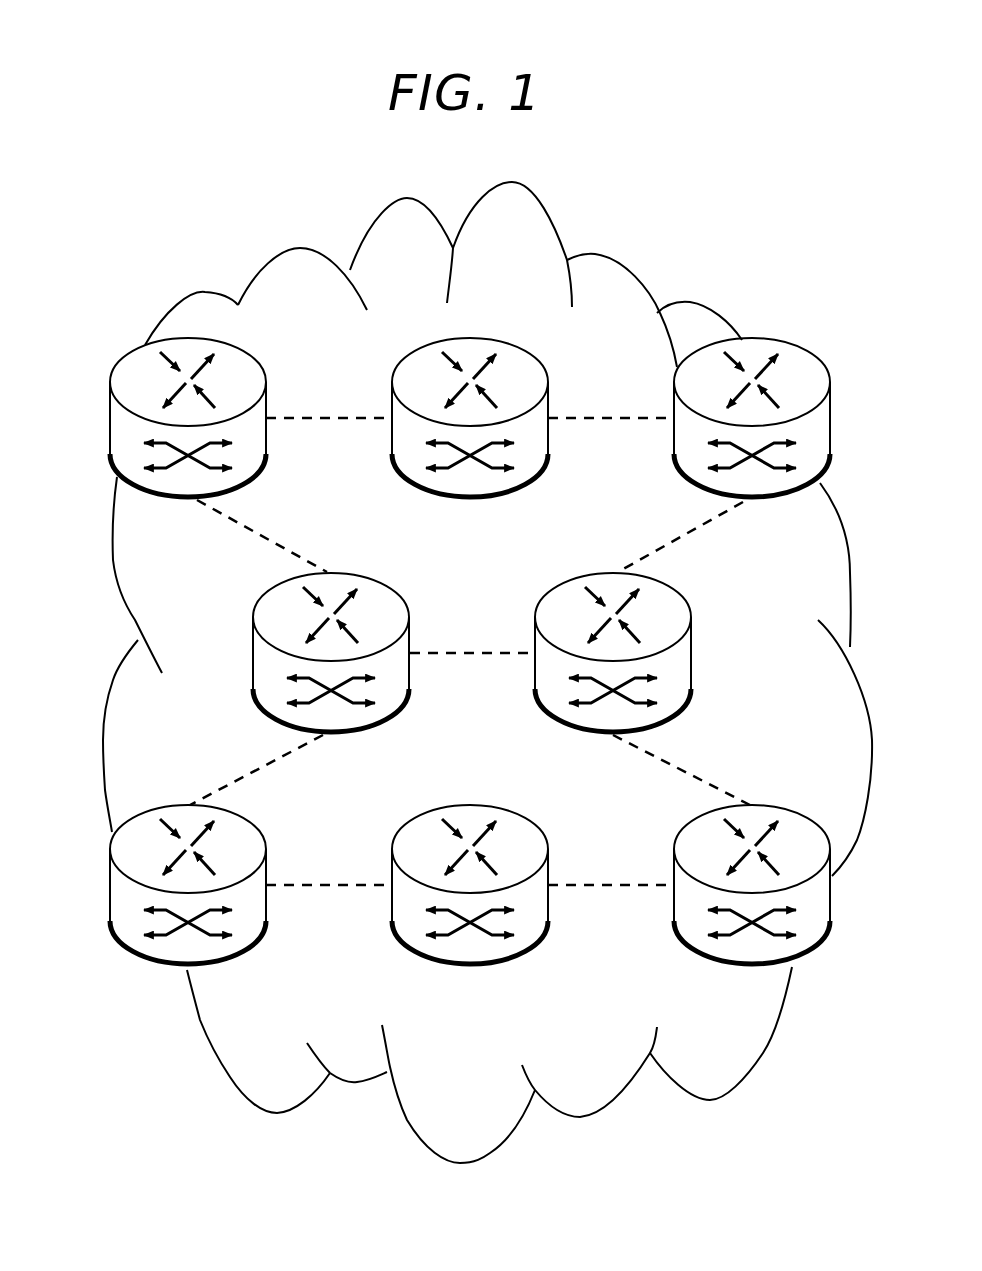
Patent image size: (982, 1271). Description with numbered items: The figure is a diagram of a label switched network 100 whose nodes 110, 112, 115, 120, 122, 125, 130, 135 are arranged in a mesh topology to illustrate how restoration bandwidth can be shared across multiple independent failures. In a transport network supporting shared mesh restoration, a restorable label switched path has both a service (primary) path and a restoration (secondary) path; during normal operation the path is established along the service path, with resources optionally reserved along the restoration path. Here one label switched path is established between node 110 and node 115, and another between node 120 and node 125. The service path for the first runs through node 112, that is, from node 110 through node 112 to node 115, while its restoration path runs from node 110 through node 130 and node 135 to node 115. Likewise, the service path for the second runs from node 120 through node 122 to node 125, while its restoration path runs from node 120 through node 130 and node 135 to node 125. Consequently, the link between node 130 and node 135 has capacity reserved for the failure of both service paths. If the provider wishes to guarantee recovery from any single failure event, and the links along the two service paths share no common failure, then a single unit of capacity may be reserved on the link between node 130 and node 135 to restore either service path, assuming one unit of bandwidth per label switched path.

The label switched network 100 is at (612, 249).
The node 110 is at (133, 351).
The node 112 is at (466, 501).
The node 115 is at (806, 349).
The node 120 is at (110, 885).
The node 122 is at (465, 805).
The node 125 is at (820, 948).
The node 130 is at (253, 650).
The node 135 is at (692, 654).